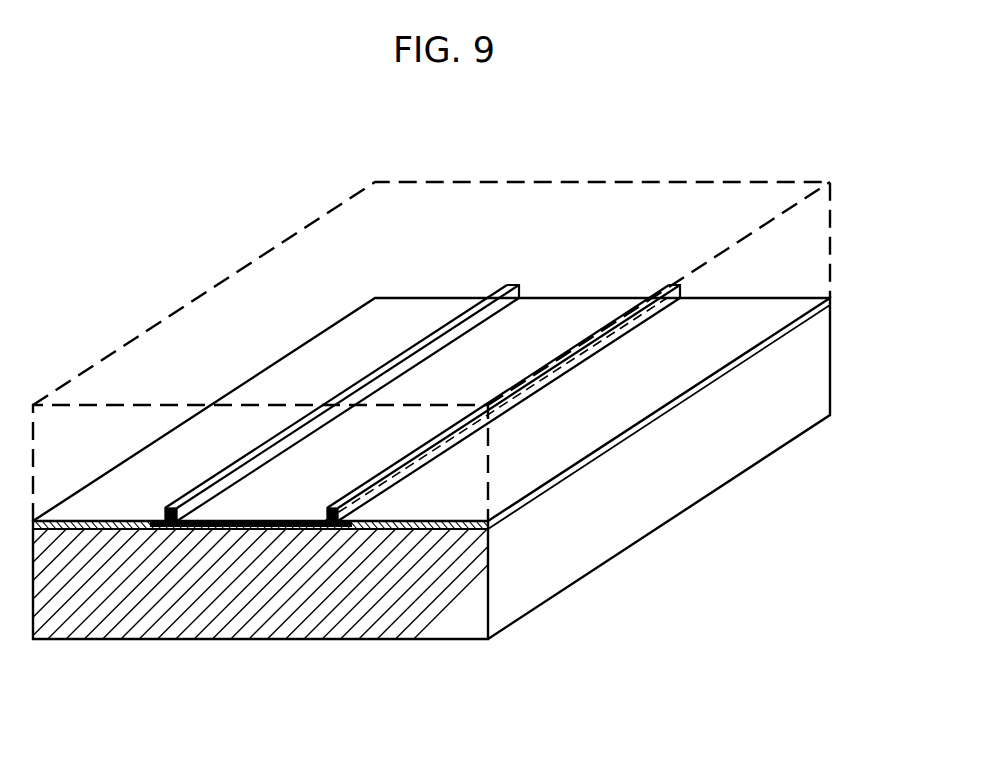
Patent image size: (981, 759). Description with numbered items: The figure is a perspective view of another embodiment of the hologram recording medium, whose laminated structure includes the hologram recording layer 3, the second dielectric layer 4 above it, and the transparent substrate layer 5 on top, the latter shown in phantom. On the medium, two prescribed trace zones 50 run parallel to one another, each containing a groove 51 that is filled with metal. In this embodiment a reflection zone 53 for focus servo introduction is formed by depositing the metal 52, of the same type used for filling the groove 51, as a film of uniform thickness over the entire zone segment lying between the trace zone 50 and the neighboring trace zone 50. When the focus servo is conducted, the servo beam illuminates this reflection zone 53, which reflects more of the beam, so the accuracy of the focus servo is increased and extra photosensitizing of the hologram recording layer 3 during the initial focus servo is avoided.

The hologram recording layer 3 is at (832, 388).
The second dielectric layer 4 is at (832, 303).
The transparent substrate layer 5 is at (832, 252).
The trace zone 50 is at (512, 281).
The groove 51 is at (373, 373).
The metal 52 is at (166, 522).
The reflection zone 53 is at (652, 297).